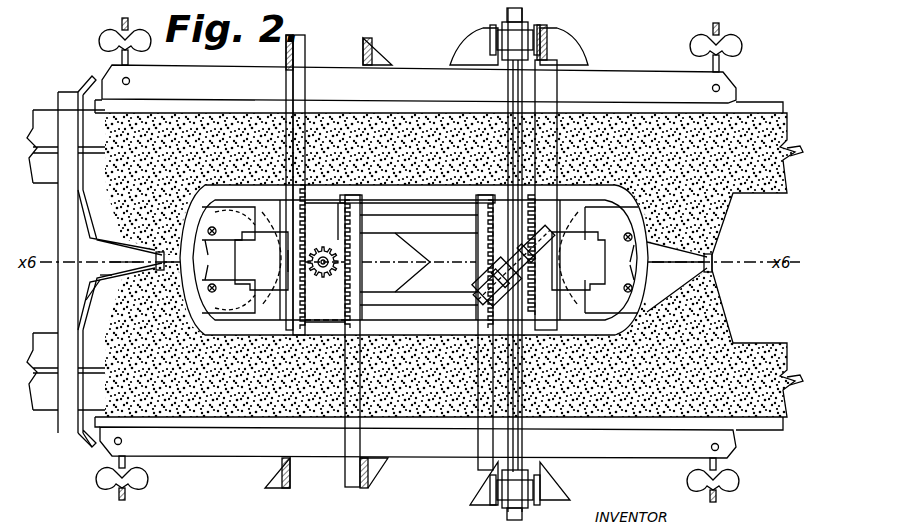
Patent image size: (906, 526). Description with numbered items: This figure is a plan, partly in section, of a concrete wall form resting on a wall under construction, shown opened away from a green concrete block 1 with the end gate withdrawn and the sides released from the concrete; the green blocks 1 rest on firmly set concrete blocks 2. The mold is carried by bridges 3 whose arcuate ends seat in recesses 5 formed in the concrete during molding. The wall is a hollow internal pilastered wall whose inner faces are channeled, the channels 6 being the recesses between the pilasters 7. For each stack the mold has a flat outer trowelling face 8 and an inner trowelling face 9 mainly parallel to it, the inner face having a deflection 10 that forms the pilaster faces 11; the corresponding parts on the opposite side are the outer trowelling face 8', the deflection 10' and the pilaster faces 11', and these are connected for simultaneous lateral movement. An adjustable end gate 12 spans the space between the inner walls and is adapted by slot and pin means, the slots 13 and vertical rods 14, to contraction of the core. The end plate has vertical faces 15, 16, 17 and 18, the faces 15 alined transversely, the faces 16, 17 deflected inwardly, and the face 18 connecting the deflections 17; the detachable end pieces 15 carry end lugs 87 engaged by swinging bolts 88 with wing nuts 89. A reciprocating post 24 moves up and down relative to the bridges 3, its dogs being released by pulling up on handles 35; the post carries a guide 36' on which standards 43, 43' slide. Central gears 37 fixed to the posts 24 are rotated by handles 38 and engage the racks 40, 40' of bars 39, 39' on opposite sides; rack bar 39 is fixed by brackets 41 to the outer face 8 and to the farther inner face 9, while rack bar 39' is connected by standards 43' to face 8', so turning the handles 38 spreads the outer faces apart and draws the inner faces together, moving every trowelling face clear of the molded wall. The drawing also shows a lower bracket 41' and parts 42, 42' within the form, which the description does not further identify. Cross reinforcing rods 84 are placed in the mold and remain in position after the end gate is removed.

The green concrete blocks 1 is at (590, 135).
The set concrete blocks 2 is at (44, 410).
The bridges 3 is at (340, 192).
The recesses 5 is at (305, 342).
The channels 6 is at (428, 194).
The pilasters 7 is at (147, 215).
The outer trowelling face 8 is at (439, 95).
The outer trowelling face 8' is at (439, 430).
The inner trowelling face 9 is at (388, 214).
The deflection 10 is at (228, 222).
The deflection 10' is at (743, 284).
The pilaster faces 11 is at (434, 247).
The pilaster faces 11' is at (228, 296).
The adjustable end gate 12 is at (232, 270).
The slots 13 is at (640, 270).
The vertical rods 14 is at (586, 250).
The vertical faces 15 is at (75, 178).
The vertical face 16 is at (81, 294).
The vertical face 17 is at (110, 275).
The vertical face 18 is at (109, 263).
The reciprocating post 24 is at (328, 236).
The handles 35 is at (498, 292).
The guide 36' is at (488, 265).
The central gears 37 is at (323, 281).
The handles 38 is at (549, 245).
The rack bar 39 is at (441, 185).
The rack bar 39' is at (401, 341).
The rack 40 is at (420, 260).
The rack 40' is at (422, 262).
The brackets 41 is at (419, 70).
The lower clamp bar 41' is at (418, 457).
The bracket 42 is at (273, 253).
The bracket 42' is at (473, 266).
The standards 43 is at (437, 263).
The standards 43' is at (368, 484).
The cross reinforcing rods 84 is at (150, 284).
The end lugs 87 is at (69, 448).
The swinging bolts 88 is at (121, 487).
The wing nuts 89 is at (100, 484).